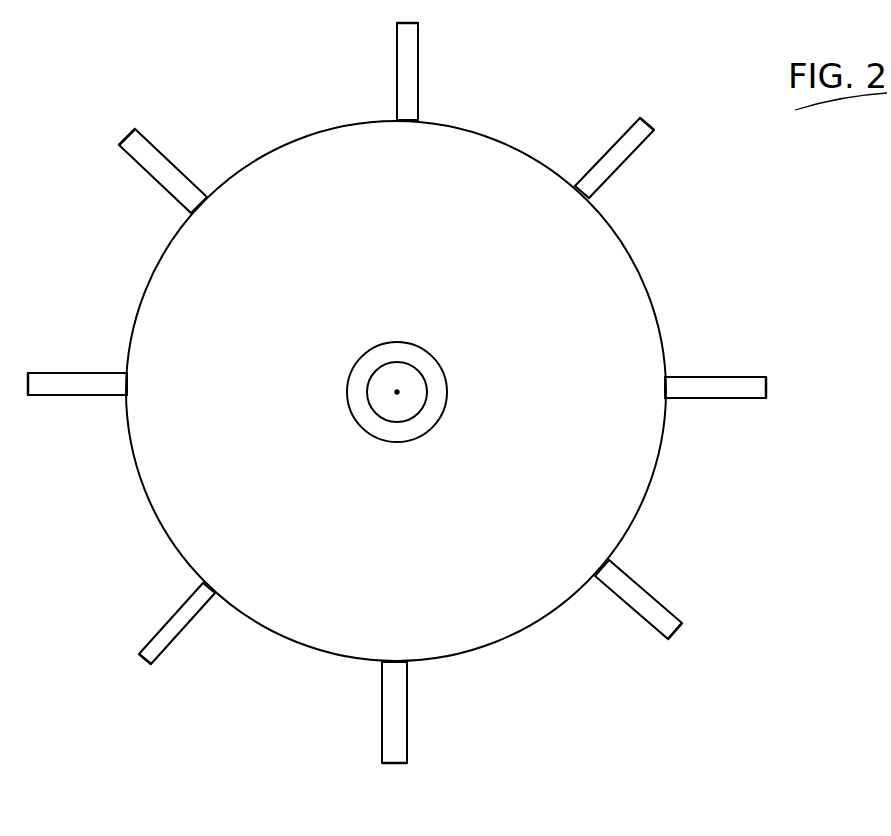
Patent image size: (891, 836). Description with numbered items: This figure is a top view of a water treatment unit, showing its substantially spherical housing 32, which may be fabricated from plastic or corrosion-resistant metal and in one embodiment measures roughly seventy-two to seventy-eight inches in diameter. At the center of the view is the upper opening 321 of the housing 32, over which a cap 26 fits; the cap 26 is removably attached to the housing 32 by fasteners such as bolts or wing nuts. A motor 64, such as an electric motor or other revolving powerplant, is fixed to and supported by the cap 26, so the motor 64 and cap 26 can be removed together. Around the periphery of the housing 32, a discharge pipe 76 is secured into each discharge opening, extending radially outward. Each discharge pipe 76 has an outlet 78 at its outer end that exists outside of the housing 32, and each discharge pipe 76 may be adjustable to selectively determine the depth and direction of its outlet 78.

The housing 32 is at (607, 317).
The cap 26 is at (428, 365).
The upper opening 321 is at (447, 407).
The motor 64 is at (392, 382).
The discharge pipe 76 is at (410, 78).
The outlet 78 is at (407, 30).